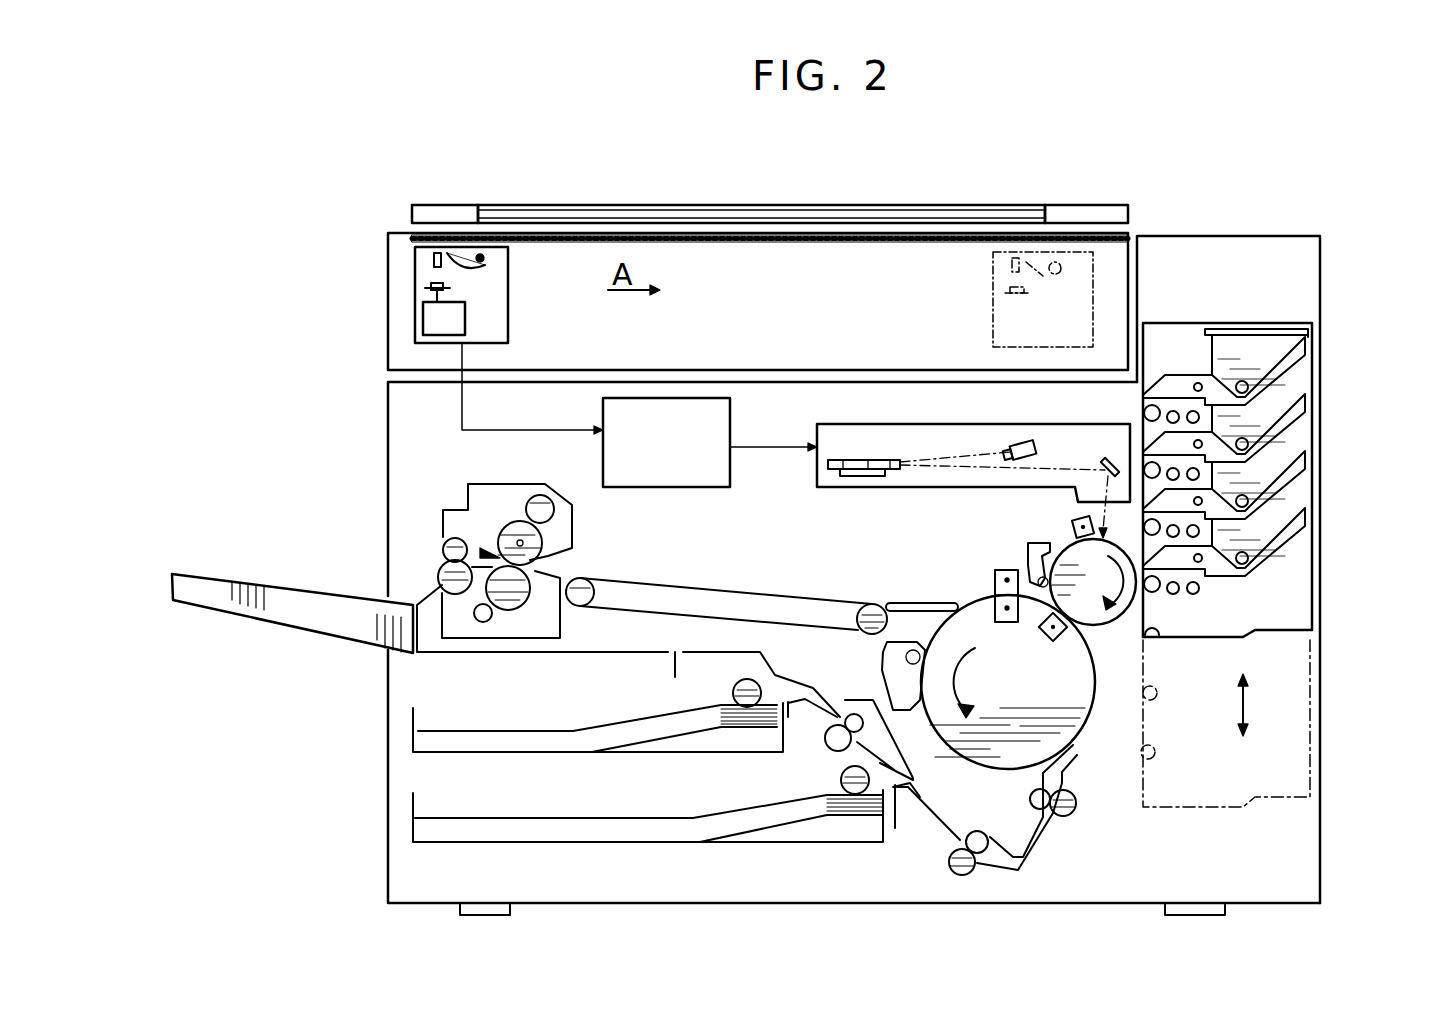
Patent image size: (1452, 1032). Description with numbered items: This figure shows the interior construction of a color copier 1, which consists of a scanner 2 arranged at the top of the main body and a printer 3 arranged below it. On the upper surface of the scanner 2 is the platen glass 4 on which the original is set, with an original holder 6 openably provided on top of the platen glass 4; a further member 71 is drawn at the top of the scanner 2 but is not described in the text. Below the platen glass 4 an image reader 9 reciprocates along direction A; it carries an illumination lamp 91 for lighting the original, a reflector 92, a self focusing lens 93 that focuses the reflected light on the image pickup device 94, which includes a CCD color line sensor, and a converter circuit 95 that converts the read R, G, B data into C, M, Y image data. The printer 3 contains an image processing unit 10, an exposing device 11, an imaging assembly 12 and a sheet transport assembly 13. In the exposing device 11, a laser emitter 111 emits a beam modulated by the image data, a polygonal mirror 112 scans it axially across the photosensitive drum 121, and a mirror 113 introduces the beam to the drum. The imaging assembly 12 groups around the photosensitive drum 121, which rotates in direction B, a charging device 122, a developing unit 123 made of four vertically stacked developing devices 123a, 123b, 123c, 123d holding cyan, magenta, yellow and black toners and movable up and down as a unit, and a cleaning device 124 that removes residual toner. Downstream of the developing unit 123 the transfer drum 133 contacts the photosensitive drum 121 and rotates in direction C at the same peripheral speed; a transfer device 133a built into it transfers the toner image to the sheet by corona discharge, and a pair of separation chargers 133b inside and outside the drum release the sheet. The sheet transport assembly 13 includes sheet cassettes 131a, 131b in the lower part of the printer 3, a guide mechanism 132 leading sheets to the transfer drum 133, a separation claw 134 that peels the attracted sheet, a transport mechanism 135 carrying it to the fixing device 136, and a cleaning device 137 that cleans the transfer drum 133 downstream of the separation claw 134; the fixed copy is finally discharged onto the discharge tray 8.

The color copier 1 is at (430, 185).
The scanner 2 is at (1120, 258).
The printer 3 is at (1270, 236).
The platen glass 4 is at (805, 236).
The original holder 6 is at (1072, 218).
The discharge tray 8 is at (322, 598).
The image reader 9 is at (508, 330).
The image processing unit 10 is at (731, 422).
The exposing device 11 is at (873, 423).
The imaging assembly 12 is at (988, 552).
The sheet transport assembly 13 is at (836, 588).
The original cover 71 is at (575, 205).
The illumination lamp 91 is at (508, 280).
The reflector 92 is at (508, 255).
The self focusing lens 93 is at (437, 258).
The image pickup device 94 is at (437, 290).
The converter circuit 95 is at (440, 325).
The laser emitter 111 is at (1013, 440).
The polygonal mirror 112 is at (850, 458).
The mirror 113 is at (1110, 458).
The photosensitive drum 121 is at (1102, 630).
The charging device 122 is at (1078, 520).
The developing unit 123 is at (1183, 323).
The developing device 123a is at (1290, 342).
The developing device 123b is at (1300, 400).
The developing device 123c is at (1300, 462).
The developing device 123d is at (1300, 522).
The cleaning device 124 is at (1030, 545).
The sheet cassette 131a is at (640, 752).
The sheet cassette 131b is at (640, 845).
The guide mechanism 132 is at (1030, 862).
The transfer drum 133 is at (1076, 742).
The transfer device 133a is at (1038, 654).
The separation chargers 133b is at (993, 593).
The separation claw 134 is at (905, 605).
The transport mechanism 135 is at (725, 590).
The fixing device 136 is at (572, 555).
The cleaning device 137 is at (885, 660).